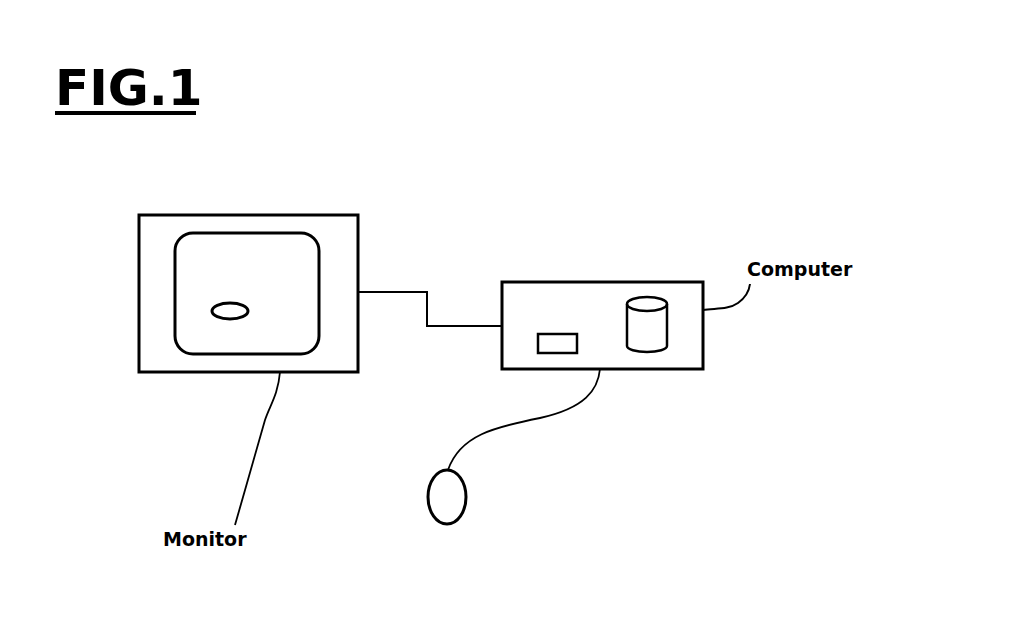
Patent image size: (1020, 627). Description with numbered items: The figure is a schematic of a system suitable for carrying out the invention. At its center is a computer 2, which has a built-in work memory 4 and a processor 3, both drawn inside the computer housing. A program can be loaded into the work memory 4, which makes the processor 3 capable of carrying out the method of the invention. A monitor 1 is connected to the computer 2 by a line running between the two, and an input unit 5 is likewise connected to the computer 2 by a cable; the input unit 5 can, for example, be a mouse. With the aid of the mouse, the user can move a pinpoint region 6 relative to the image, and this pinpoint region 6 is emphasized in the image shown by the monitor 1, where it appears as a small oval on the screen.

The monitor 1 is at (212, 372).
The computer 2 is at (703, 369).
The processor 3 is at (553, 333).
The work memory 4 is at (668, 312).
The input unit 5 is at (466, 506).
The pinpoint region 6 is at (232, 303).